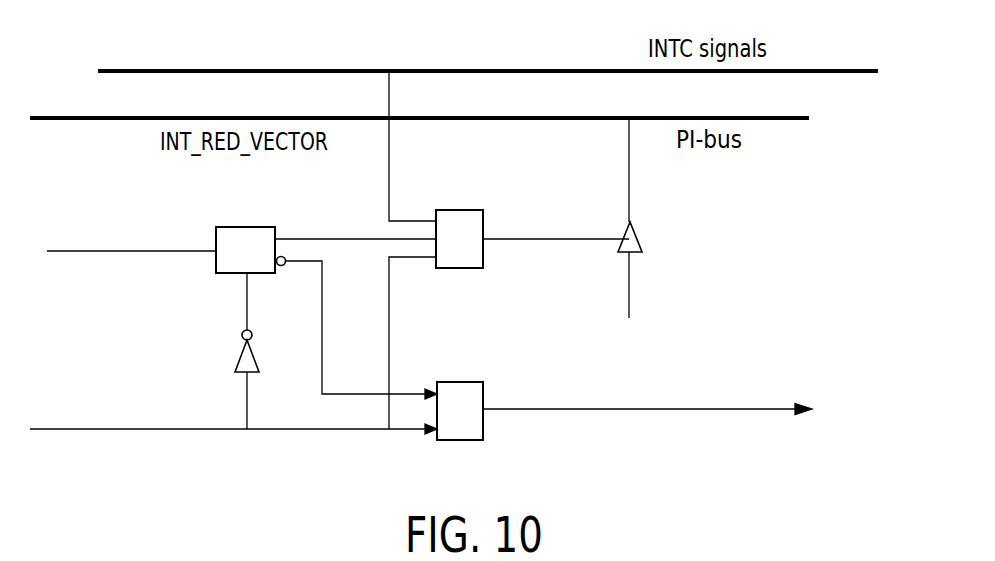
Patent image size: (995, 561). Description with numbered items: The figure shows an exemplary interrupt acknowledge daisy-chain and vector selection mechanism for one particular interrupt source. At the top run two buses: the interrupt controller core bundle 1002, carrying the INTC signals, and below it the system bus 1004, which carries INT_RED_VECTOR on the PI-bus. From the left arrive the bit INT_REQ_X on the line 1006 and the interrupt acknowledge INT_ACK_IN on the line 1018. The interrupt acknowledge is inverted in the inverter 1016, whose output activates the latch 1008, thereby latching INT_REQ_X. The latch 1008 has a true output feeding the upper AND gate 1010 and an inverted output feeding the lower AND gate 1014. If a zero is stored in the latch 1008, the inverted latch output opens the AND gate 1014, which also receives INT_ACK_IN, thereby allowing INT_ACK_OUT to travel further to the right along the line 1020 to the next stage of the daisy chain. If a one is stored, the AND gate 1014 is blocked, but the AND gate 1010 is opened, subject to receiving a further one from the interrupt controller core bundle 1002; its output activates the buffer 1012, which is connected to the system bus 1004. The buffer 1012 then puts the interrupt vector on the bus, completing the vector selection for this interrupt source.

The interrupt controller core bundle 1002 is at (155, 67).
The system bus 1004 is at (103, 122).
The INT_REQ_X input line 1006 is at (105, 256).
The latch 1008 is at (233, 227).
The AND gate 1010 is at (485, 218).
The buffer 1012 is at (644, 240).
The AND gate 1014 is at (487, 388).
The inverter 1016 is at (236, 358).
The INT_ACK_IN line 1018 is at (300, 432).
The INT_ACK_OUT line 1020 is at (580, 414).